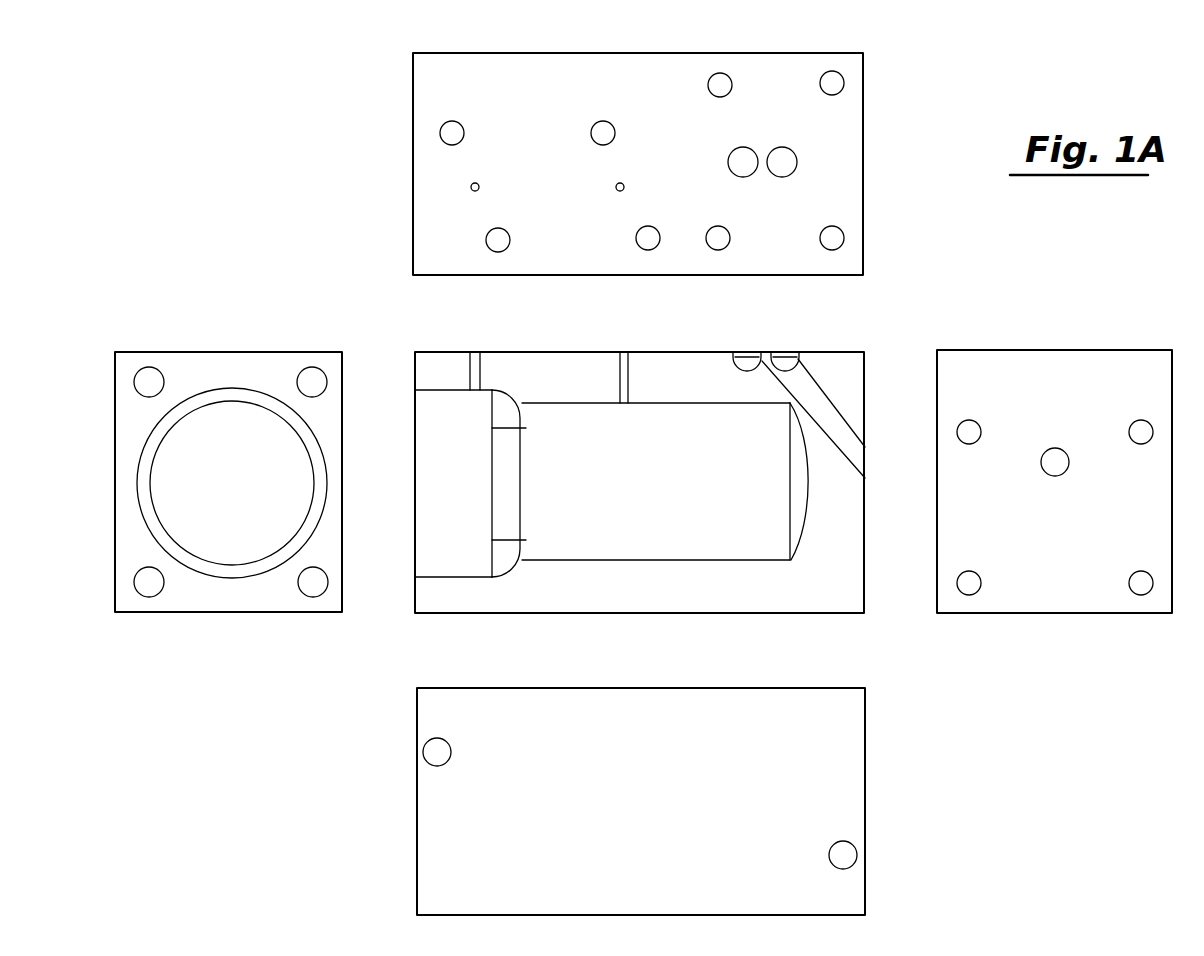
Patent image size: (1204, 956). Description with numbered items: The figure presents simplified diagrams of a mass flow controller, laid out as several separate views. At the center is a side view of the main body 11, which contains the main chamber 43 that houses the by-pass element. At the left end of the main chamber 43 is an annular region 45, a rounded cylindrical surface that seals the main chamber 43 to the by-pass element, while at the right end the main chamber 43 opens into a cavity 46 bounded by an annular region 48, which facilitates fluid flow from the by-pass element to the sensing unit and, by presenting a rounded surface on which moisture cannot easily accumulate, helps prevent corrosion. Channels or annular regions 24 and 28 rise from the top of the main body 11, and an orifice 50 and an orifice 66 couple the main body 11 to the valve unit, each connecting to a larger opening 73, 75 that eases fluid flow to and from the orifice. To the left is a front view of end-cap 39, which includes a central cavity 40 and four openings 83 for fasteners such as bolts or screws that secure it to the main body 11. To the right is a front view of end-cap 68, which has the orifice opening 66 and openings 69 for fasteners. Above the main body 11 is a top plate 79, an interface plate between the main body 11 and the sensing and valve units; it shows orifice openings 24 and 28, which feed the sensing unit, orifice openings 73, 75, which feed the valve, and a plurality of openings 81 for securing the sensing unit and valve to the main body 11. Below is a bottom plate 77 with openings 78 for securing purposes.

The main body 11 is at (575, 372).
The orifice opening 24 is at (478, 183).
The orifice opening 28 is at (623, 183).
The end-cap 39 is at (238, 360).
The cavity 40 is at (217, 454).
The main chamber 43 is at (620, 560).
The annular region 45 is at (507, 571).
The cavity 46 is at (800, 490).
The annular region 48 is at (805, 523).
The orifice 50 is at (762, 380).
The orifice 66 is at (828, 405).
The end-cap 68 is at (982, 362).
The openings 69 is at (970, 423).
The opening 73 is at (738, 148).
The opening 75 is at (783, 147).
The bottom plate 77 is at (823, 762).
The openings 78 is at (451, 752).
The top plate 79 is at (433, 197).
The openings 81 is at (455, 122).
The openings 83 is at (150, 373).